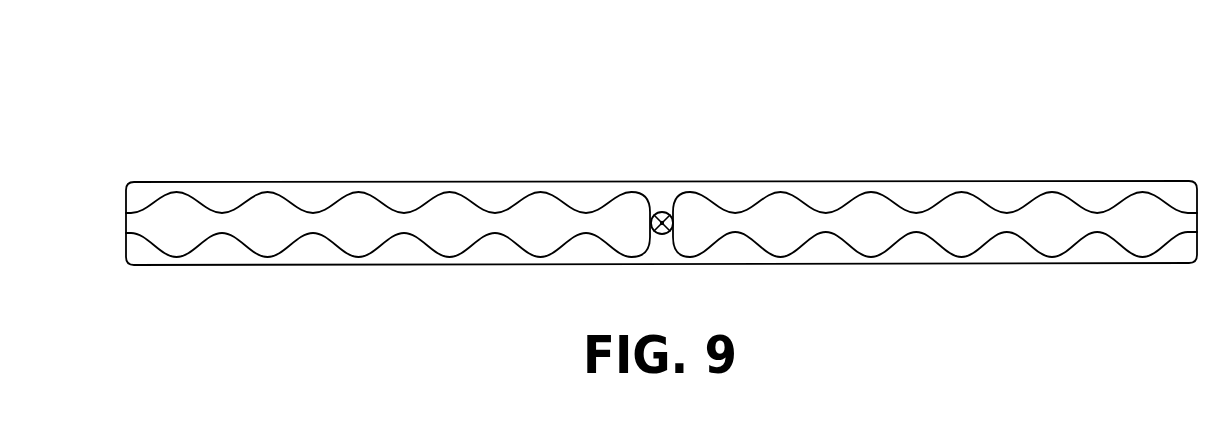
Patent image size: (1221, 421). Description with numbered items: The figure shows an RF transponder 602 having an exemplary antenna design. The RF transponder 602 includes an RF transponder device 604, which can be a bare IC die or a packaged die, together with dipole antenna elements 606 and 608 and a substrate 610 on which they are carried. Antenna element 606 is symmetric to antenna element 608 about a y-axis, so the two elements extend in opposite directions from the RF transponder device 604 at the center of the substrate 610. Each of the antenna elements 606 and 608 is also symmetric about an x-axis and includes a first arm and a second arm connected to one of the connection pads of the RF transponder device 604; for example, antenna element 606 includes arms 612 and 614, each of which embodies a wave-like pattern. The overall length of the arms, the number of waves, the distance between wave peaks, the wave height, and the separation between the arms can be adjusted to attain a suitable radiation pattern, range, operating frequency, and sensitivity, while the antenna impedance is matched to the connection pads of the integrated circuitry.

The RF transponder 602 is at (138, 78).
The RF transponder device 604 is at (668, 212).
The dipole antenna element 606 is at (548, 190).
The dipole antenna element 608 is at (872, 191).
The substrate 610 is at (143, 197).
The arm 612 is at (274, 192).
The arm 614 is at (268, 258).